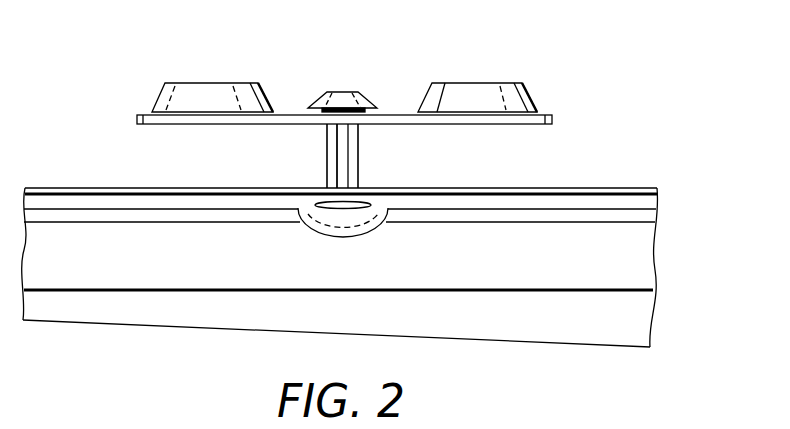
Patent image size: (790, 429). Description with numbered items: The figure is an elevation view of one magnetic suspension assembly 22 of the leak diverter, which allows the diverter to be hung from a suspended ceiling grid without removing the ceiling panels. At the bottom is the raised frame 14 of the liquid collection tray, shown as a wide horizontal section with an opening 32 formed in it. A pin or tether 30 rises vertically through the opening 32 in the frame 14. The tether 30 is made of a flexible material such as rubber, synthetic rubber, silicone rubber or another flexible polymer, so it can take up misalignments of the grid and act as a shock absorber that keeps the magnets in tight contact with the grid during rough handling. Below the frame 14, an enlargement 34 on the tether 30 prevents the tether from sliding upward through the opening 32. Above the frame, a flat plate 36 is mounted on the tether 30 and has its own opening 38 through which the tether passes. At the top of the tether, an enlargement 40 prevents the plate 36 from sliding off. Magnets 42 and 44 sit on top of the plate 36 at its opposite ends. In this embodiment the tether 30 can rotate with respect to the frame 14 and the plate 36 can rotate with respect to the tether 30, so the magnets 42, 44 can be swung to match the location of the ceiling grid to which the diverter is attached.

The frame 14 is at (650, 202).
The magnetic suspension assembly 22 is at (567, 65).
The tether 30 is at (352, 157).
The opening 32 is at (368, 210).
The enlargement 34 is at (320, 231).
The plate 36 is at (510, 124).
The opening 38 is at (336, 126).
The enlargement 40 is at (343, 92).
The magnet 42 is at (208, 83).
The magnet 44 is at (470, 83).